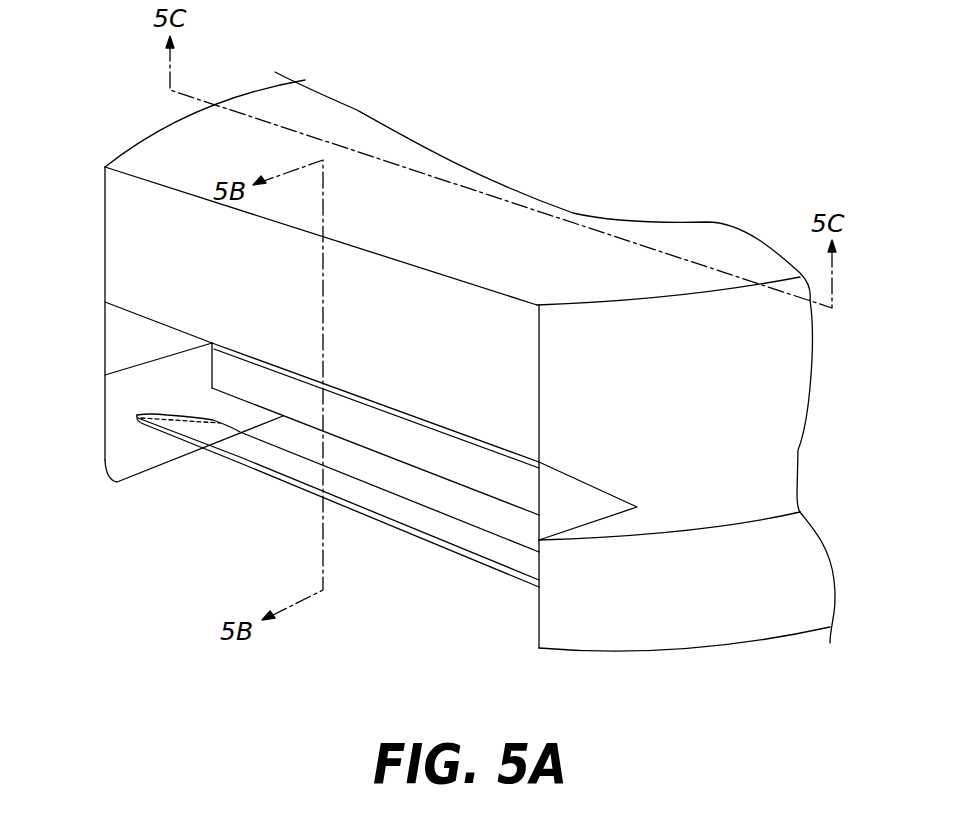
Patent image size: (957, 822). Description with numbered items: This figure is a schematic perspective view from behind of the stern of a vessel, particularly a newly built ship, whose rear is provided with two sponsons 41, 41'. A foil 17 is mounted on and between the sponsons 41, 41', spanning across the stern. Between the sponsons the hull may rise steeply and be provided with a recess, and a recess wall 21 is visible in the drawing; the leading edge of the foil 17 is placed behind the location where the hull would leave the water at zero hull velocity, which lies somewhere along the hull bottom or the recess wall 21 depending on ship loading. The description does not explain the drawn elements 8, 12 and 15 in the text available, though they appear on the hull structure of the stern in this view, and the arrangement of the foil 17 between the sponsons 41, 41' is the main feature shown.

The lower body portion edge 8 is at (703, 530).
The body 12 is at (260, 104).
The front face 15 is at (143, 222).
The foil 17 is at (428, 517).
The recess wall 21 is at (225, 373).
The sponson 41 is at (194, 482).
The sponson 41' is at (687, 616).